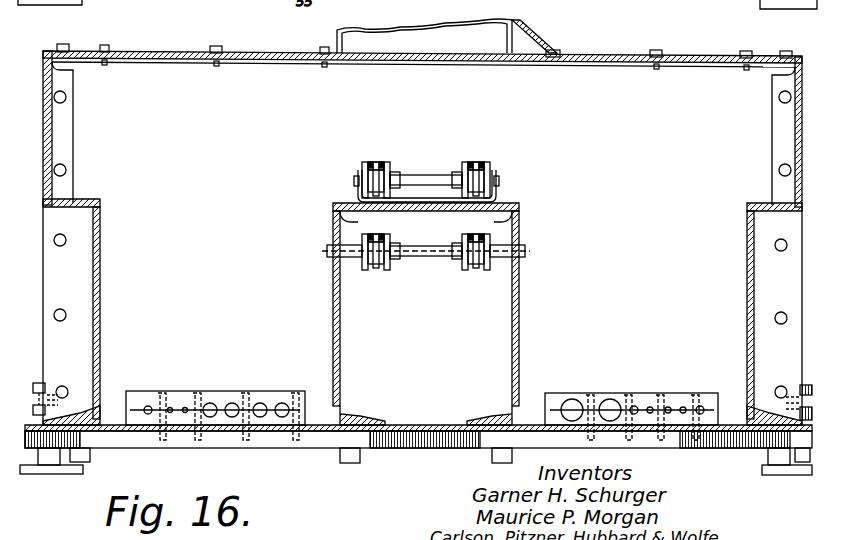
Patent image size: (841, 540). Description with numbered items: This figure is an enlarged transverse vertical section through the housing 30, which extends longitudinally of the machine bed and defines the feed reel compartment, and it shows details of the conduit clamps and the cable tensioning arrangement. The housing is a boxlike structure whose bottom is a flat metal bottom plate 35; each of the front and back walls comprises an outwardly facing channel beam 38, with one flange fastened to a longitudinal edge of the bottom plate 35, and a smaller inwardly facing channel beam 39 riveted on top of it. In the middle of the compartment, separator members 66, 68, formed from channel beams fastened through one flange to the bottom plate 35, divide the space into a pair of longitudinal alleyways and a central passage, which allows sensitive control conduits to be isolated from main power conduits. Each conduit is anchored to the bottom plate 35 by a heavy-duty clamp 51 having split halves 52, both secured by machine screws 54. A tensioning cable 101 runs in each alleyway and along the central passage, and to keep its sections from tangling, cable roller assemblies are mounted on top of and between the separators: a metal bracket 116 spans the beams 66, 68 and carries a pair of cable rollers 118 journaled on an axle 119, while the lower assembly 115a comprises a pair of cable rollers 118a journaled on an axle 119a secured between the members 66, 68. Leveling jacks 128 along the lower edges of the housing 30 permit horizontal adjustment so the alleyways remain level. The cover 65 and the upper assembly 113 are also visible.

The housing 30 is at (678, 55).
The cover 65 is at (503, 30).
The smaller channel beam 39 is at (790, 133).
The channel beam 38 is at (98, 322).
The separator member 68 is at (340, 322).
The separator member 66 is at (514, 318).
The metal bracket 116 is at (496, 196).
The upper roller assembly 113 is at (502, 158).
The flexible cable 101 is at (364, 163).
The cable rollers 118 is at (376, 163).
The cable rollers 118a is at (376, 270).
The axle 119 is at (424, 176).
The axle 119a is at (419, 250).
The cable roller assembly 115a is at (503, 285).
The split halves 52 is at (127, 410).
The clamp 51 is at (265, 391).
The machine screws 54 is at (197, 394).
The bottom plate 35 is at (283, 448).
The leveling jacks 128 is at (42, 392).